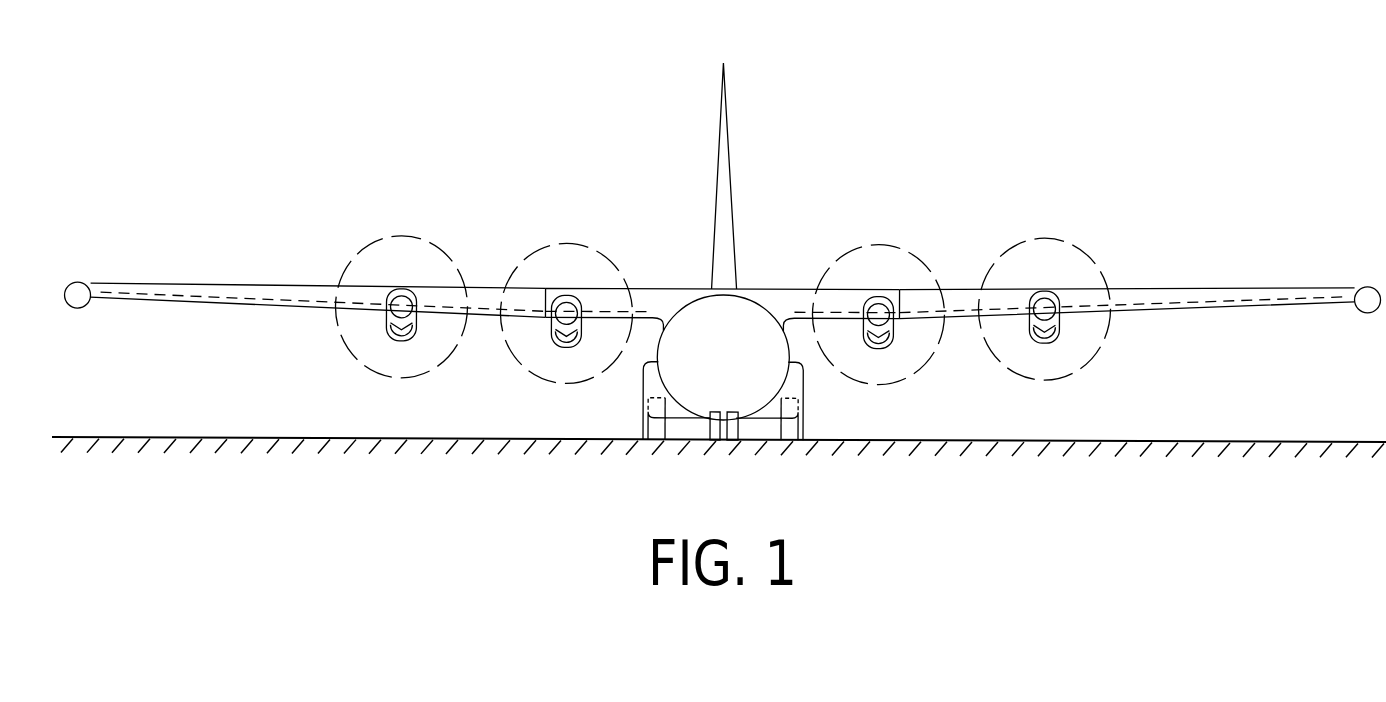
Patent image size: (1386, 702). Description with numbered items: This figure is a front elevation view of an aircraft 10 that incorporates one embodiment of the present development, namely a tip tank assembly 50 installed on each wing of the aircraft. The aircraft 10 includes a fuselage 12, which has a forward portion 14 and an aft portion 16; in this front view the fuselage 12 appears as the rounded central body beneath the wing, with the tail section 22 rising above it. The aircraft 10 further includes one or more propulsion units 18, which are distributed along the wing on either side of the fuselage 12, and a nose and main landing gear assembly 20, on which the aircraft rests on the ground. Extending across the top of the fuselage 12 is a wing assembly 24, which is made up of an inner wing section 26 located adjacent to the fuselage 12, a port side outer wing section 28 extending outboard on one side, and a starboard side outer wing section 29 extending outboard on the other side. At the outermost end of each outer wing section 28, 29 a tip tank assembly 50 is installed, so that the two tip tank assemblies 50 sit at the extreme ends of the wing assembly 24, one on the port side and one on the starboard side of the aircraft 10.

The aircraft 10 is at (272, 168).
The fuselage 12 is at (657, 348).
The forward portion 14 is at (710, 335).
The aft portion 16 is at (752, 217).
The propulsion units 18 is at (401, 306).
The nose and main landing gear assembly 20 is at (653, 437).
The tail section 22 is at (727, 140).
The wing assembly 24 is at (482, 232).
The inner wing section 26 is at (773, 298).
The port side outer wing section 28 is at (1186, 293).
The starboard side outer wing section 29 is at (258, 290).
The tip tank assembly 50 is at (82, 275).